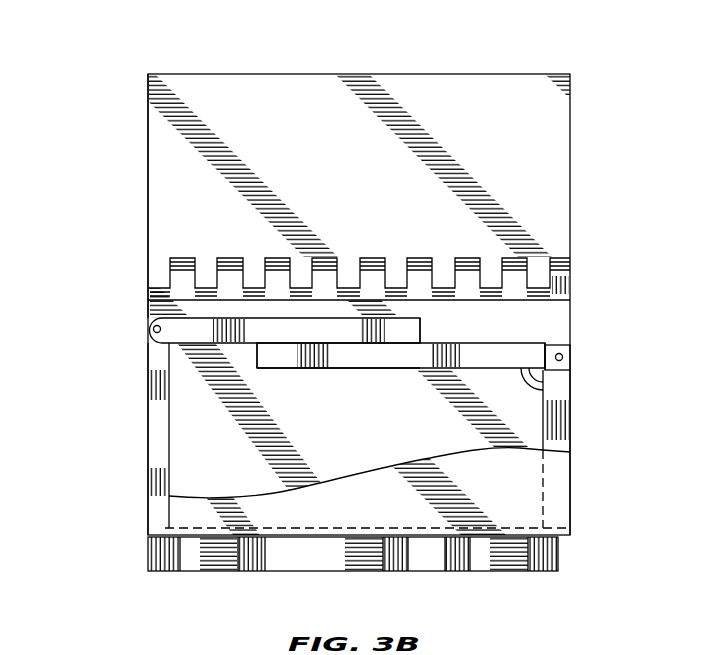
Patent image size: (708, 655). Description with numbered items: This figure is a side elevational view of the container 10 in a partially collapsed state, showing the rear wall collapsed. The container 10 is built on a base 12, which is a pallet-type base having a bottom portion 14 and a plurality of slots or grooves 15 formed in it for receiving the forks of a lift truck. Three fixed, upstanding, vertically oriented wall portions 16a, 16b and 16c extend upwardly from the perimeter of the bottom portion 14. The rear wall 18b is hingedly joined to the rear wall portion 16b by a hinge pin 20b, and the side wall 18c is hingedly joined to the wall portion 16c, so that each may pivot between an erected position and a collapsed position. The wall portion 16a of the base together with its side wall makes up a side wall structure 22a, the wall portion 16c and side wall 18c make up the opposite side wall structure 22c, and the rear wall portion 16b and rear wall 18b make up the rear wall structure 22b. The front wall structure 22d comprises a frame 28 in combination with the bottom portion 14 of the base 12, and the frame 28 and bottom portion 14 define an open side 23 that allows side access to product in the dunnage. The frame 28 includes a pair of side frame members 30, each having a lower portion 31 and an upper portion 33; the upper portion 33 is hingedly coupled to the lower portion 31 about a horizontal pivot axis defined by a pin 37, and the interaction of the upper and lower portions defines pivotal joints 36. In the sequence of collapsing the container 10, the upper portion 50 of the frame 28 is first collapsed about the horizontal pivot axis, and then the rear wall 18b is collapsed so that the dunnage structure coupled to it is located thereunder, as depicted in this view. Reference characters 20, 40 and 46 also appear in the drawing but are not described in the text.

The container 10 is at (46, 76).
The base 12 is at (201, 574).
The bottom portion 14 is at (378, 527).
The slots or grooves 15 is at (291, 572).
The wall portion 16a is at (304, 509).
The rear wall portion 16b is at (170, 459).
The wall portion 16c is at (212, 434).
The rear wall 18b is at (208, 317).
The side wall 18c is at (516, 124).
The housing 20 is at (205, 72).
The hinge pin 20b is at (153, 329).
The side wall structure 22a is at (146, 500).
The rear wall structure 22b is at (147, 420).
The side wall structure 22c is at (147, 212).
The front wall structure 22d is at (572, 425).
The open side 23 is at (592, 290).
The frame 28 is at (429, 341).
The side frame members 30 is at (298, 372).
The lower portion 31 is at (543, 473).
The upper portion 33 is at (357, 370).
The pivotal joints 36 is at (541, 344).
The pin 37 is at (563, 357).
The inner fillet 40 is at (534, 390).
The outer fillet 46 is at (524, 378).
The upper portion 50 is at (255, 353).